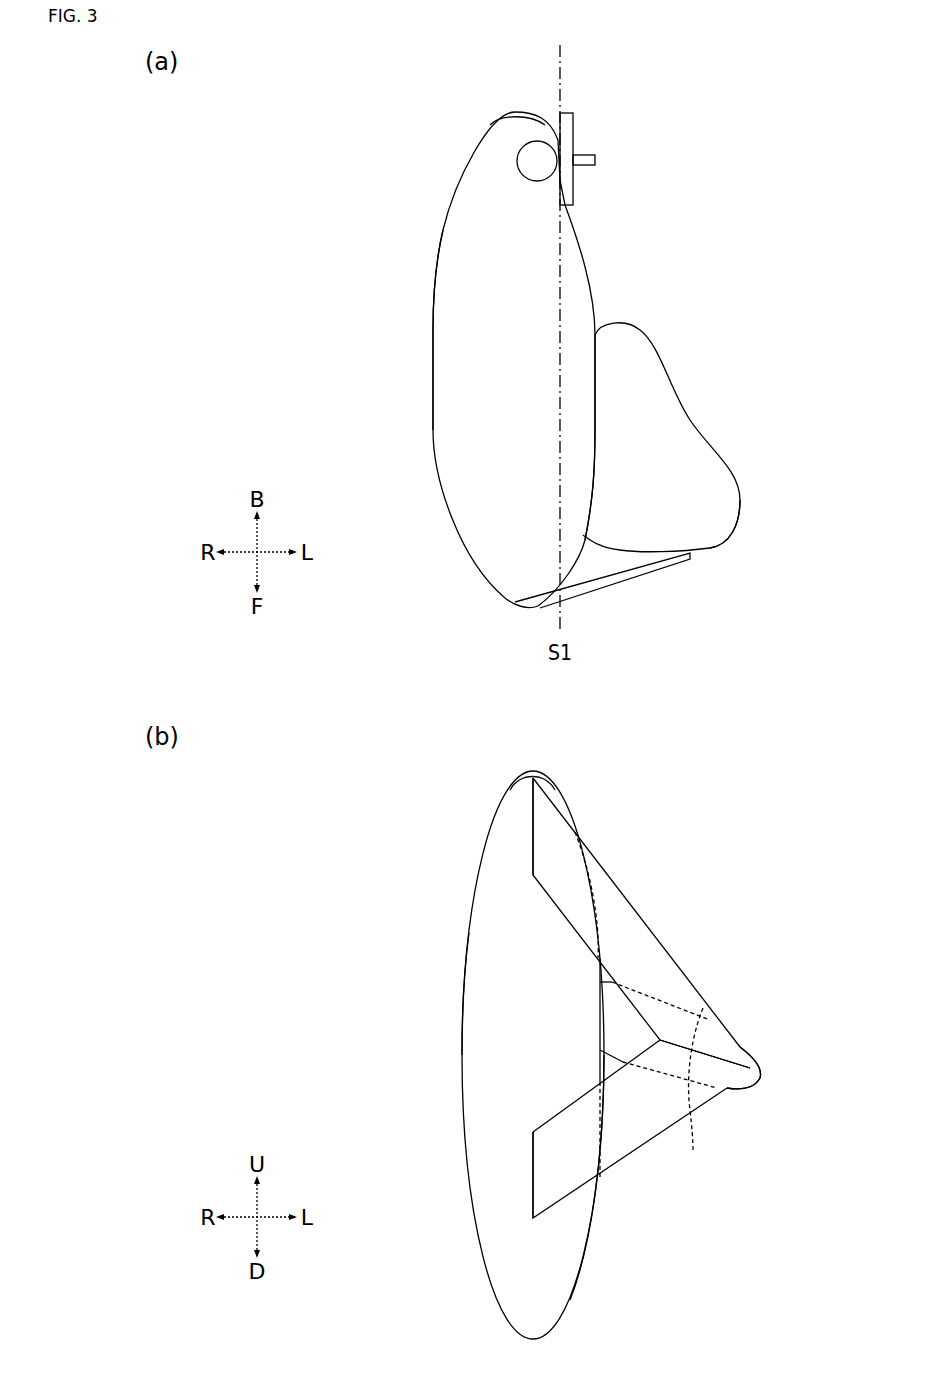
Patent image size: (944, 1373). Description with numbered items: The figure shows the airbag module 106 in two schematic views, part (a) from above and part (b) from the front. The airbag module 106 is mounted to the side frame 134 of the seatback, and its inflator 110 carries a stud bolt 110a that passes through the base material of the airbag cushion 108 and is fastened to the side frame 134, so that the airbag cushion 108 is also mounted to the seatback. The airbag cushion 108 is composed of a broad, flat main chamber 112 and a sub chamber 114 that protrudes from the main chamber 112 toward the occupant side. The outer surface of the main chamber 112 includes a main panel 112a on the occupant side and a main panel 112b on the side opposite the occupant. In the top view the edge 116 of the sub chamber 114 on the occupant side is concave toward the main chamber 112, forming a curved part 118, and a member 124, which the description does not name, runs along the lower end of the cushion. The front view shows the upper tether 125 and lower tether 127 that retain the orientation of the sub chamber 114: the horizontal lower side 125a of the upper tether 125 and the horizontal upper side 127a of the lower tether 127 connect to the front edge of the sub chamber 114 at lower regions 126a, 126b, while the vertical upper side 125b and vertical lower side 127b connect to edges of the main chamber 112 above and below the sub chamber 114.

The airbag module 106 is at (406, 137).
The airbag cushion 108 is at (522, 112).
The inflator 110 is at (518, 158).
The stud bolt 110a is at (597, 160).
The main chamber 112 is at (436, 433).
The main panel 112a is at (592, 283).
The main panel 112b is at (433, 275).
The sub chamber 114 is at (723, 548).
The edge 116 is at (682, 416).
The curved part 118 is at (699, 432).
The strap 124 is at (613, 580).
The upper tether 125 is at (622, 907).
The lower side 125a is at (680, 1040).
The upper side 125b is at (533, 835).
The lower region 126a is at (740, 1045).
The lower region 126b is at (725, 1090).
The lower tether 127 is at (612, 1152).
The upper side 127a is at (692, 1095).
The lower side 127b is at (533, 1170).
The side frame 134 is at (575, 123).